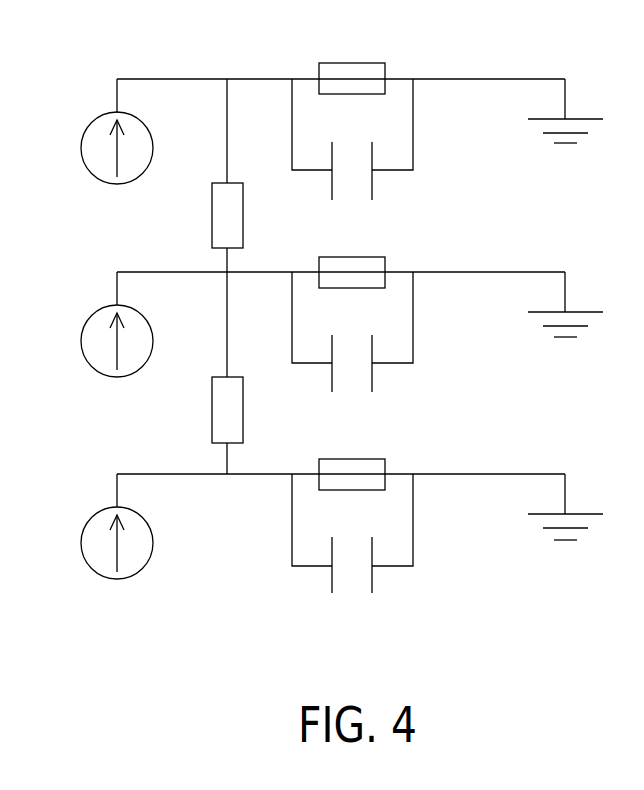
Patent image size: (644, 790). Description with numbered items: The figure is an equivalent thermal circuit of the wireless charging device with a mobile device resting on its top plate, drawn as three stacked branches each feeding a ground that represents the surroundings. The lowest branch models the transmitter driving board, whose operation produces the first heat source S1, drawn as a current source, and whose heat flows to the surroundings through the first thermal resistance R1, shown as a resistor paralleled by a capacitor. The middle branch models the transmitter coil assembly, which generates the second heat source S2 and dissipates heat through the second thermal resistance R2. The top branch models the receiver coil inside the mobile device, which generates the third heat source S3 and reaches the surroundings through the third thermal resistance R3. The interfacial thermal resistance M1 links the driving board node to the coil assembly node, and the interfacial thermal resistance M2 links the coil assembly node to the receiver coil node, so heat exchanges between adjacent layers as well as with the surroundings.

The first heat source S1 is at (97, 526).
The second heat source S2 is at (97, 324).
The third heat source S3 is at (97, 131).
The first thermal resistance R1 is at (352, 505).
The second thermal resistance R2 is at (352, 304).
The third thermal resistance R3 is at (352, 111).
The interfacial thermal resistance M1 is at (250, 373).
The interfacial thermal resistance M2 is at (251, 175).